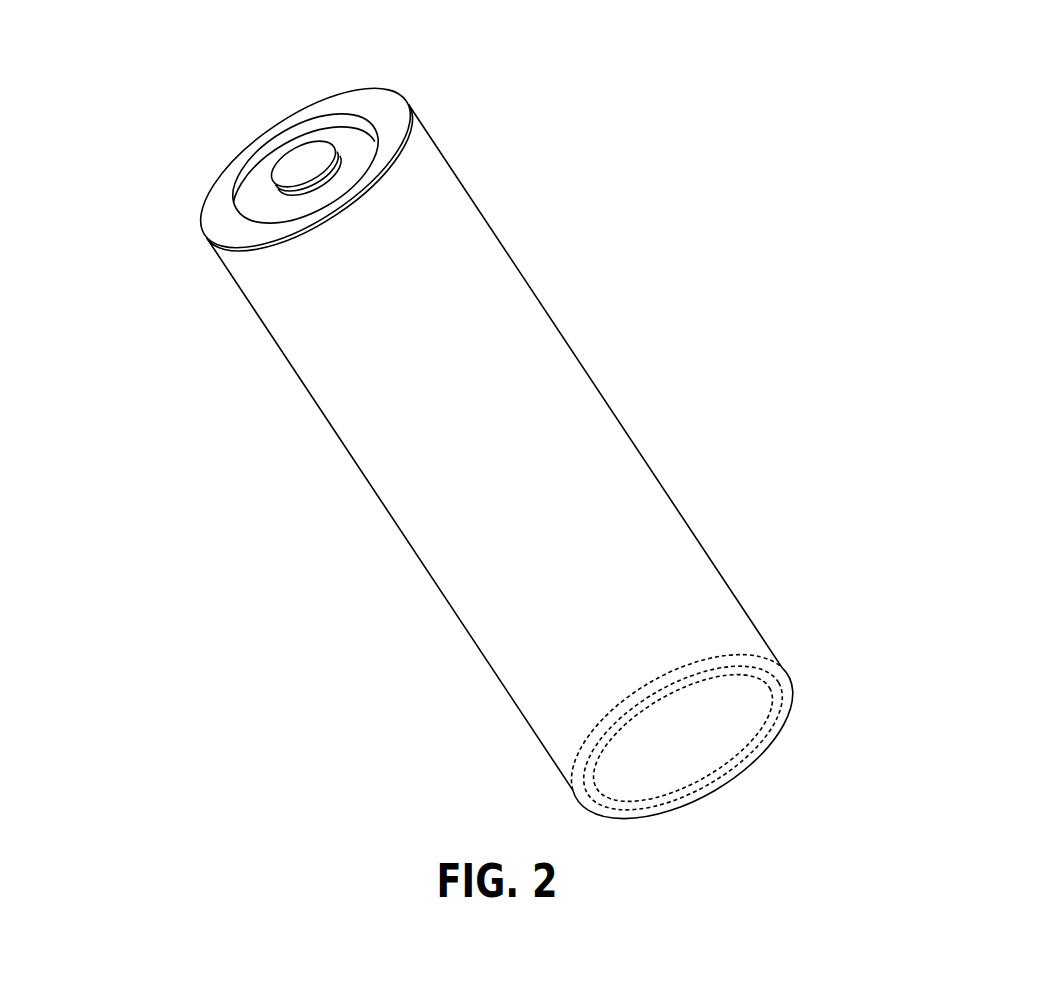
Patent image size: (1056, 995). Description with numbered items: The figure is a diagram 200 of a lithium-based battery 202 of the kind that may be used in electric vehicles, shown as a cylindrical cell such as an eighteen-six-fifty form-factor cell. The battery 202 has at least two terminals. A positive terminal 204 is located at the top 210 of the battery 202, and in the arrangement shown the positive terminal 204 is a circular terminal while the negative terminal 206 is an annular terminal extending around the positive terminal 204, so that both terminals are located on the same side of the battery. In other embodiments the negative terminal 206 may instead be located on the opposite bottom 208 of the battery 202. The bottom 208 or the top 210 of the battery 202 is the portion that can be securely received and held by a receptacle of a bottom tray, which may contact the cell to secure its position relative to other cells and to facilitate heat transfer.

The diagram 200 is at (612, 453).
The lithium-based battery 202 is at (513, 479).
The positive terminal 204 is at (306, 168).
The negative terminal 206 is at (302, 170).
The bottom 208 is at (682, 737).
The top 210 is at (306, 170).